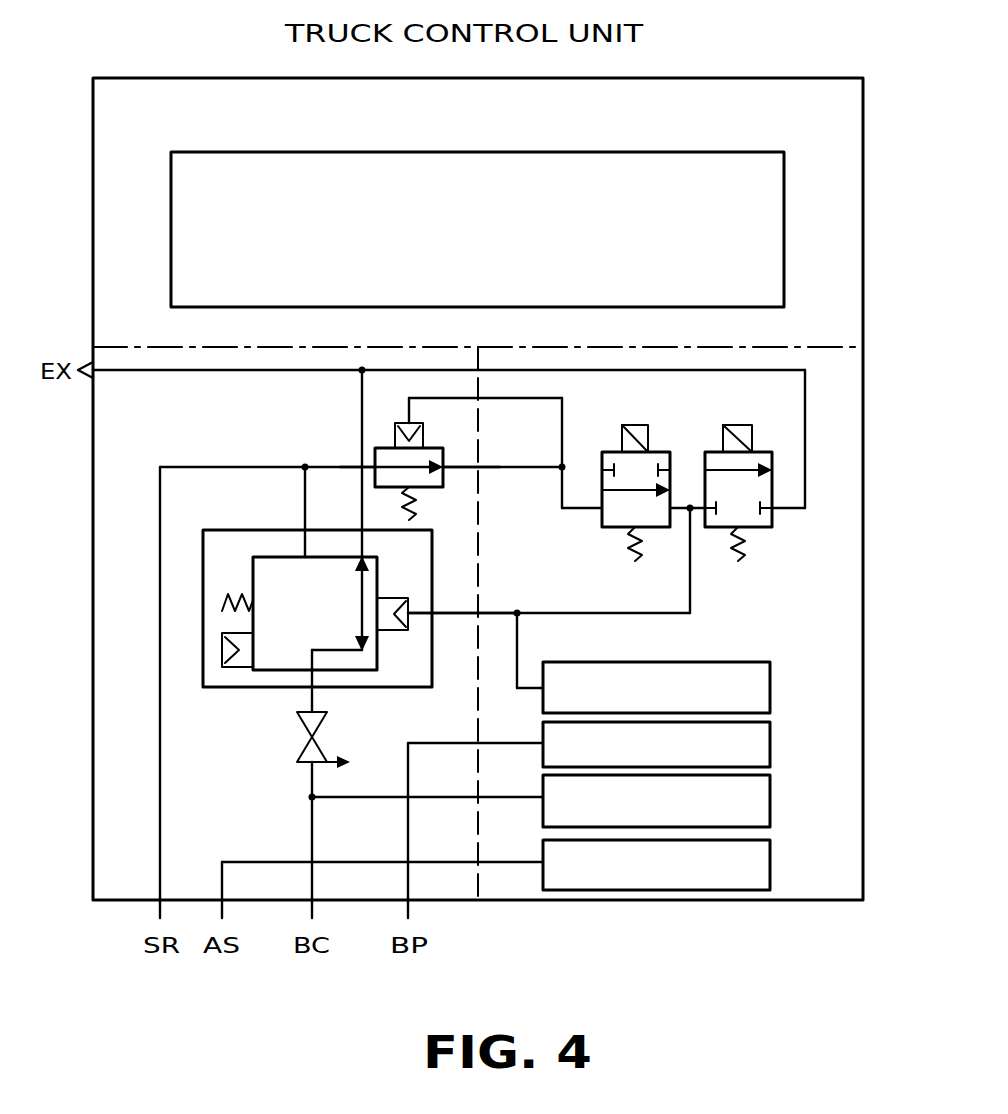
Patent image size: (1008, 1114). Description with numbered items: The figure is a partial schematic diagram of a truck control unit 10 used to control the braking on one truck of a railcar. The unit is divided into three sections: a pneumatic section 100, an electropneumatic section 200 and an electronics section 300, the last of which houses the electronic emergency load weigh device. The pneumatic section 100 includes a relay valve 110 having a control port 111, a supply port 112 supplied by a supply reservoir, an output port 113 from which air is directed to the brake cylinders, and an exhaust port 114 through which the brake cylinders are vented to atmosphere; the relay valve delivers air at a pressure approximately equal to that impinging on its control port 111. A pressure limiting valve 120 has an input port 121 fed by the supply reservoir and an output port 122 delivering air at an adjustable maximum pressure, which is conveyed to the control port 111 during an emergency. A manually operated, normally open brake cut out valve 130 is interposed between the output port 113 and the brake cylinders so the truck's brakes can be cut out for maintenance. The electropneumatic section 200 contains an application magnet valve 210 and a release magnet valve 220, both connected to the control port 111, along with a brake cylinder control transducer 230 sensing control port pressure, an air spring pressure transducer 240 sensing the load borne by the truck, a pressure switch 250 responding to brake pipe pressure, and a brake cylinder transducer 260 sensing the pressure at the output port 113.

The truck control unit 10 is at (753, 67).
The pneumatic section 100 is at (185, 433).
The relay valve 110 is at (246, 689).
The control port 111 is at (410, 612).
The supply port 112 is at (305, 556).
The output port 113 is at (315, 690).
The exhaust port 114 is at (361, 555).
The pressure limiting valve 120 is at (383, 446).
The input port 121 is at (376, 466).
The output port 122 is at (445, 468).
The brake cut out valve 130 is at (298, 752).
The electropneumatic section 200 is at (805, 629).
The application magnet valve 210 is at (606, 520).
The release magnet valve 220 is at (769, 521).
The brake cylinder control transducer 230 is at (772, 688).
The air spring pressure transducer 240 is at (772, 865).
The pressure switch 250 is at (772, 745).
The brake cylinder transducer 260 is at (772, 802).
The electronics section 300 is at (503, 285).